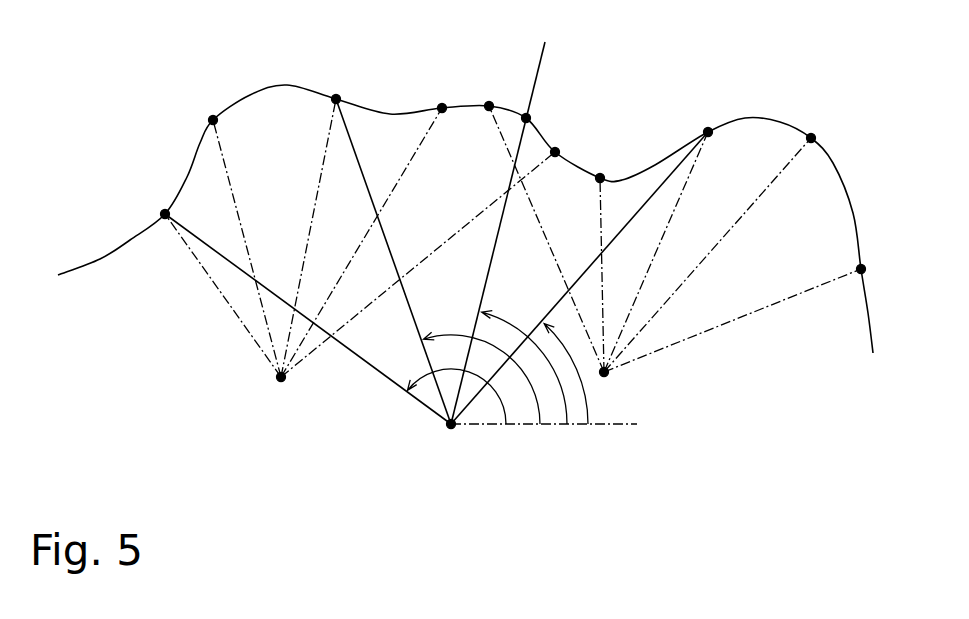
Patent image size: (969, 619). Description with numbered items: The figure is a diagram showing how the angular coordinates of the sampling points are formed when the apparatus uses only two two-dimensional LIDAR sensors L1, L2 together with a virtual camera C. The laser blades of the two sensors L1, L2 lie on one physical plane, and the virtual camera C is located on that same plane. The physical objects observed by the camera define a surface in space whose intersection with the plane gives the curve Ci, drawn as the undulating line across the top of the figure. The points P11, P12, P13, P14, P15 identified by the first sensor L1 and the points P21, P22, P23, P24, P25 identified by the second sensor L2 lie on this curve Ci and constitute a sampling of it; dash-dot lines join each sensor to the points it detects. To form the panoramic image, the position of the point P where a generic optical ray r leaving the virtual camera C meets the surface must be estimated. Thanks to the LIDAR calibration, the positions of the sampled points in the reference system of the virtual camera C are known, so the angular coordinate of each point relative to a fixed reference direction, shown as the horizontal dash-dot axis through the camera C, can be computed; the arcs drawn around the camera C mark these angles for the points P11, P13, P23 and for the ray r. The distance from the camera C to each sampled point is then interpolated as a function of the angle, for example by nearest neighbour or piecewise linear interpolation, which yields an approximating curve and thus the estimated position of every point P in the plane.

The curve Ci is at (458, 219).
The virtual camera C is at (532, 437).
The first two-dimensional LIDAR sensor L1 is at (360, 257).
The second two-dimensional LIDAR sensor L2 is at (675, 261).
The generic optical ray r is at (498, 221).
The intersection point P is at (536, 105).
The point identified by first sensor P11 is at (295, 306).
The point identified by first sensor P12 is at (201, 110).
The point identified by first sensor P13 is at (392, 249).
The point identified by first sensor P14 is at (449, 94).
The point identified by first sensor P15 is at (571, 141).
The point identified by second sensor P21 is at (498, 93).
The point identified by second sensor P22 is at (613, 168).
The point identified by second sensor P23 is at (585, 261).
The point identified by second sensor P24 is at (826, 129).
The point identified by second sensor P25 is at (877, 267).